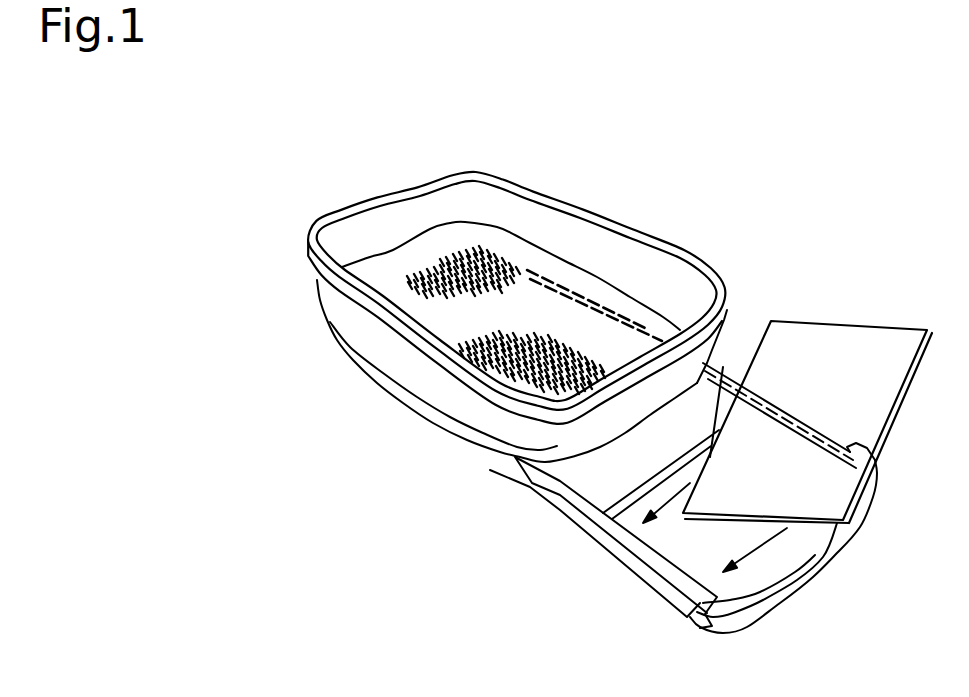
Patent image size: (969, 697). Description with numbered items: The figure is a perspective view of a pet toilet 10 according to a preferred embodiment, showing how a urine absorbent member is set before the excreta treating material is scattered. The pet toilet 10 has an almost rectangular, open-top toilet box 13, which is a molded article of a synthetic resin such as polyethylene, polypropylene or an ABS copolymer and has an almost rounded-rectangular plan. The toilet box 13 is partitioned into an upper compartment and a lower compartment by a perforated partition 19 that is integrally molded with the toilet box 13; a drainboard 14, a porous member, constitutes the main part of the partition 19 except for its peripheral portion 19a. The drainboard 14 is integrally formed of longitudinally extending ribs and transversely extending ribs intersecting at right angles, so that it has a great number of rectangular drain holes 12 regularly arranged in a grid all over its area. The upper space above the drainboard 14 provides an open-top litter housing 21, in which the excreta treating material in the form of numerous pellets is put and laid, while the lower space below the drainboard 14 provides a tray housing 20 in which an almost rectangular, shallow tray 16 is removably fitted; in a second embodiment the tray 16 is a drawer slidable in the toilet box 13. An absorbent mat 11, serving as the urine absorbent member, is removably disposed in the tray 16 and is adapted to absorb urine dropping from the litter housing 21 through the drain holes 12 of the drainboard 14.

The pet toilet 10 is at (517, 289).
The absorbent mat 11 is at (624, 437).
The drain holes 12 is at (540, 378).
The toilet box 13 is at (493, 195).
The drainboard 14 is at (447, 263).
The tray 16 is at (677, 580).
The perforated partition 19 is at (393, 253).
The peripheral portion 19a is at (550, 263).
The tray housing 20 is at (723, 367).
The litter housing 21 is at (634, 273).